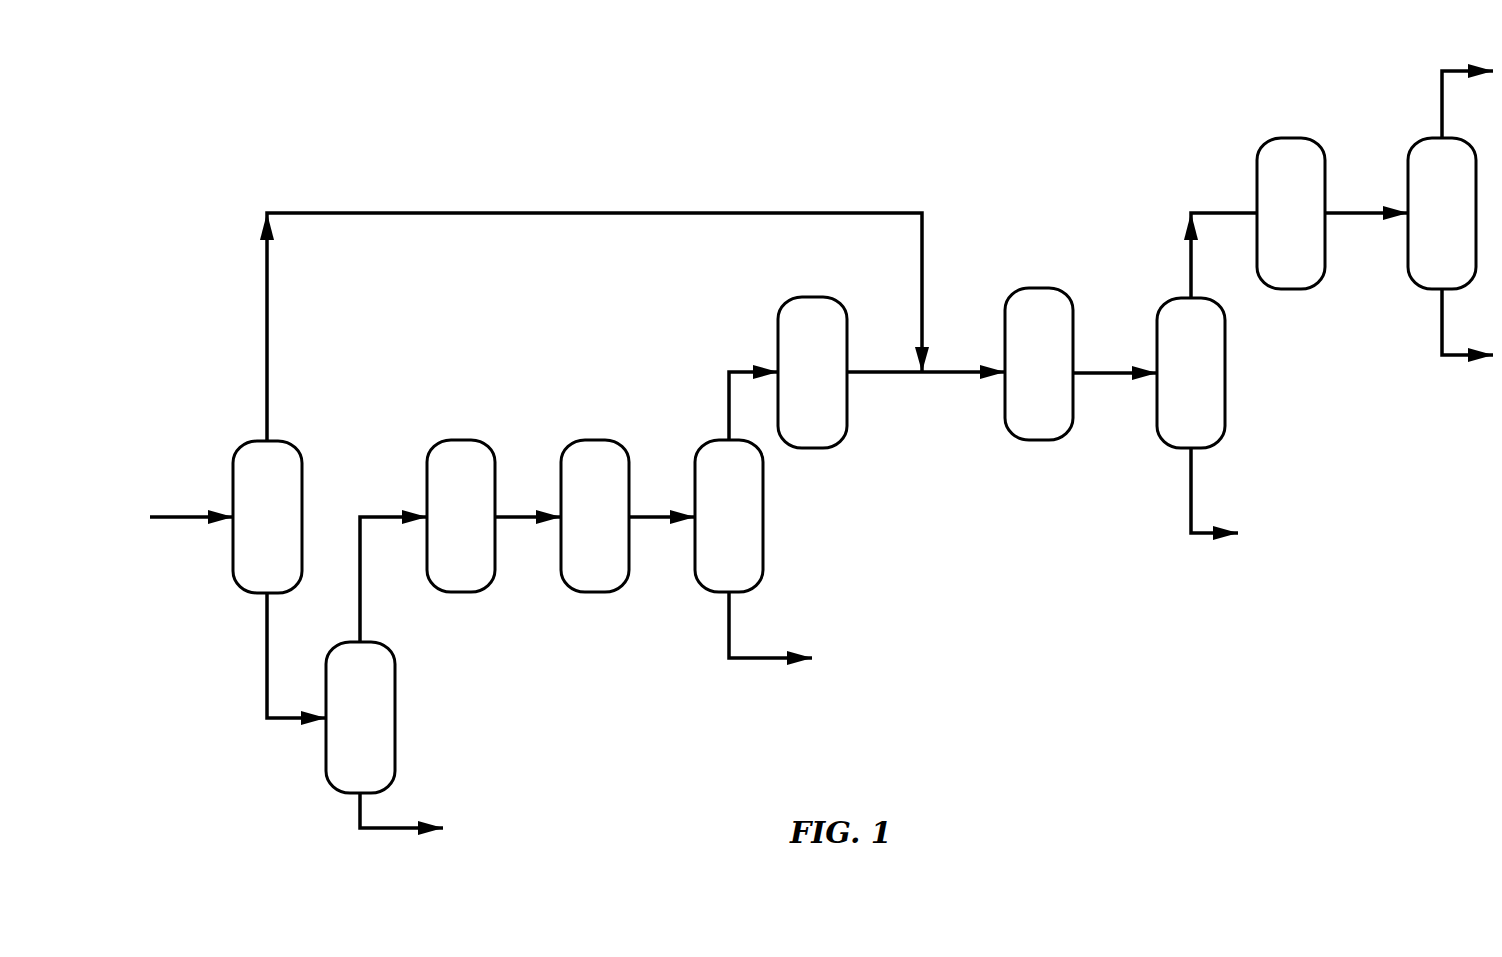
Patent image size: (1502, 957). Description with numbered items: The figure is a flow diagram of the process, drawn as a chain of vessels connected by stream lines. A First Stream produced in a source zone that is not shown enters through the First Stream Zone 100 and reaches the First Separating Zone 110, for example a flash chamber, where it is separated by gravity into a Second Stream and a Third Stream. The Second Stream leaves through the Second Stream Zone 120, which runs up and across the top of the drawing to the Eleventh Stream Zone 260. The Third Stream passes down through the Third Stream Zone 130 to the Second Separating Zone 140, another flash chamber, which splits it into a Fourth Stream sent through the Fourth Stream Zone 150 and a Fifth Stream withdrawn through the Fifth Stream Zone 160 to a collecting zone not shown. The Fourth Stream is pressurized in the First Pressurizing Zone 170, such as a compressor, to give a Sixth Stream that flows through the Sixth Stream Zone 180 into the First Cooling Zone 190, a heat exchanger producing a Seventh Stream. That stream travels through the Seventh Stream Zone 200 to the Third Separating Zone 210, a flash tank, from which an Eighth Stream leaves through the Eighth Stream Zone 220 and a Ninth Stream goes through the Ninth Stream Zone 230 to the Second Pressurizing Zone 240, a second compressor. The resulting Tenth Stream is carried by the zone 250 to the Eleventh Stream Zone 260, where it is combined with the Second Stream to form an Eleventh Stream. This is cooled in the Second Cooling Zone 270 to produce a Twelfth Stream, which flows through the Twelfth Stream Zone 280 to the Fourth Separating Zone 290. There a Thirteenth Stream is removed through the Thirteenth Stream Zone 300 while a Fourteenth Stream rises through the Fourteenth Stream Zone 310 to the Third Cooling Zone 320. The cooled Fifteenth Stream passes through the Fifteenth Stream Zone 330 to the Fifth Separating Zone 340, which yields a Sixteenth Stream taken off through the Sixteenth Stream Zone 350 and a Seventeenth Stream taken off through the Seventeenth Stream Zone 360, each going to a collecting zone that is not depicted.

The First Stream Zone 100 is at (190, 512).
The First Separating Zone 110 is at (293, 531).
The Second Stream Zone 120 is at (265, 325).
The Third Stream Zone 130 is at (263, 683).
The Second Separating Zone 140 is at (386, 732).
The Fourth Stream Zone 150 is at (388, 512).
The Fifth Stream Zone 160 is at (389, 832).
The First Pressurizing Zone 170 is at (487, 531).
The Sixth Stream Zone 180 is at (530, 512).
The First Cooling Zone 190 is at (621, 531).
The Seventh Stream Zone 200 is at (665, 512).
The Third Separating Zone 210 is at (755, 531).
The Eighth Stream Zone 220 is at (757, 662).
The Ninth Stream Zone 230 is at (727, 390).
The Second Pressurizing Zone 240 is at (838, 386).
The effluent stream 250 is at (885, 366).
The Eleventh Stream Zone 260 is at (960, 366).
The Second Cooling Zone 270 is at (1065, 380).
The Twelfth Stream Zone 280 is at (1114, 367).
The Fourth Separating Zone 290 is at (1217, 387).
The Thirteenth Stream Zone 300 is at (1188, 488).
The Fourteenth Stream Zone 310 is at (1218, 208).
The Third Cooling Zone 320 is at (1317, 226).
The Fifteenth Stream Zone 330 is at (1367, 208).
The Fifth Separating Zone 340 is at (1442, 213).
The Sixteenth Stream Zone 350 is at (1440, 322).
The Seventeenth Stream Zone 360 is at (1440, 112).